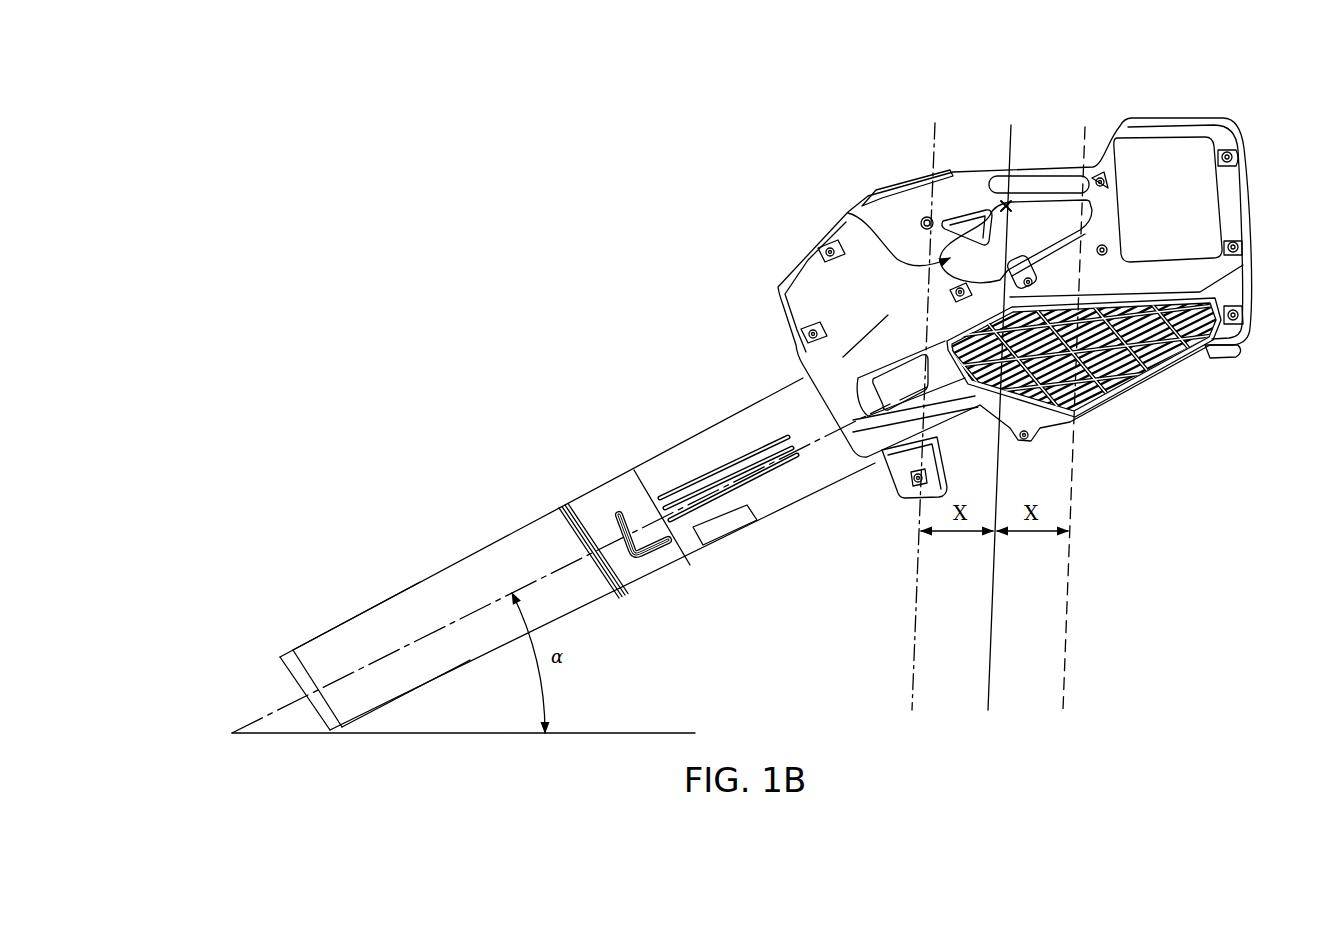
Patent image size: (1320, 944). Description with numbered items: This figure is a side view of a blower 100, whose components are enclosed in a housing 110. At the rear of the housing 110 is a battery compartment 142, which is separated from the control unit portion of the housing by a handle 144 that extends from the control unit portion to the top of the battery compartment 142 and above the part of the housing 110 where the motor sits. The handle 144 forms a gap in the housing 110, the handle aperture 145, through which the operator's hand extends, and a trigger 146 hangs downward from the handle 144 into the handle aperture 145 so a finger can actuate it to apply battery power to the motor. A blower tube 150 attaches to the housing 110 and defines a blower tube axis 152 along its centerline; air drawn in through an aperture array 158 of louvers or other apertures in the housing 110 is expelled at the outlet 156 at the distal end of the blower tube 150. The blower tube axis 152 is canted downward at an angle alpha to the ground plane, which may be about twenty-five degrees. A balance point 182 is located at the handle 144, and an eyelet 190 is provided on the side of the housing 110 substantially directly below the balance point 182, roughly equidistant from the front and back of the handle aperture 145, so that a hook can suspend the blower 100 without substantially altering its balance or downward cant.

The blower 100 is at (443, 210).
The housing 110 is at (860, 203).
The battery compartment 142 is at (1150, 165).
The handle 144 is at (1042, 172).
The handle aperture 145 is at (848, 213).
The trigger 146 is at (972, 220).
The blower tube 150 is at (487, 543).
The blower tube axis 152 is at (393, 647).
The outlet 156 is at (303, 698).
The aperture array 158 is at (1130, 362).
The balance point 182 is at (1006, 204).
The eyelet 190 is at (1040, 268).